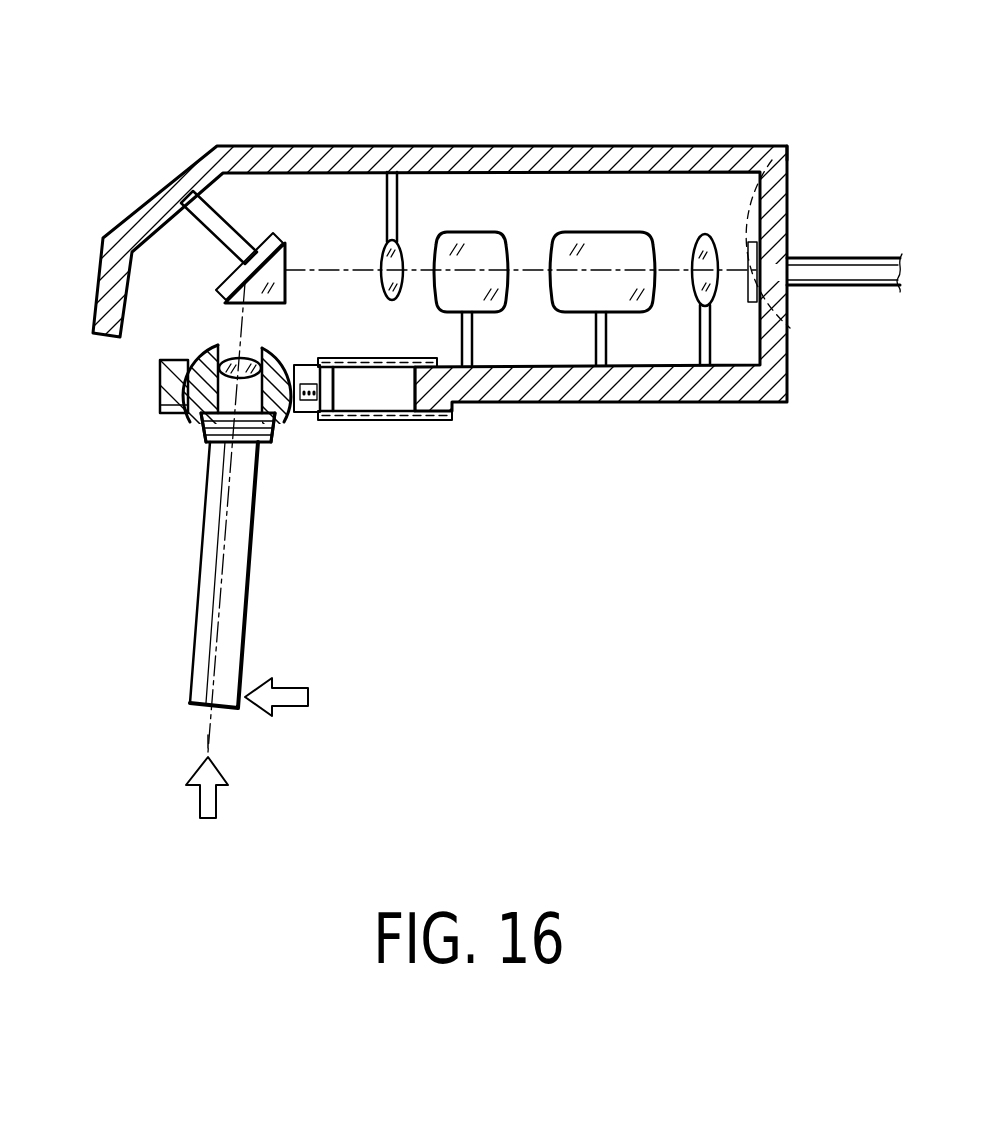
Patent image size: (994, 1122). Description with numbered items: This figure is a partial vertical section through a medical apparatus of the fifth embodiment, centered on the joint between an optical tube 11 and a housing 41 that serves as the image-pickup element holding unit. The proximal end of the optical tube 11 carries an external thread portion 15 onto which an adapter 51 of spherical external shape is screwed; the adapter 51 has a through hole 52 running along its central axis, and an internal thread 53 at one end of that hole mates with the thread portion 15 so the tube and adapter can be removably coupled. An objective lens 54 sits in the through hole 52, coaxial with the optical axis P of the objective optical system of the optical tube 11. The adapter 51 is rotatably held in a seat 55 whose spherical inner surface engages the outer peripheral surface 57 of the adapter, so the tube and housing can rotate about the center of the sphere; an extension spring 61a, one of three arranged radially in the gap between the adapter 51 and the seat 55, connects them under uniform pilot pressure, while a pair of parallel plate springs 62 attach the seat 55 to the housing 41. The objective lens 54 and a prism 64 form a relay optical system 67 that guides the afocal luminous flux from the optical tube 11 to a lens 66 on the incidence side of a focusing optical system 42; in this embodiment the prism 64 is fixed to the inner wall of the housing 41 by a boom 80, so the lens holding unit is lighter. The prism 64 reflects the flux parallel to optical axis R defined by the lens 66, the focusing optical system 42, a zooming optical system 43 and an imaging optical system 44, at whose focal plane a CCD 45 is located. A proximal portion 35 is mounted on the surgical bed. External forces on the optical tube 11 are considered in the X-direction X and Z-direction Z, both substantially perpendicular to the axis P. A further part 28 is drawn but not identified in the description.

The optical tube 11 is at (193, 640).
The external thread portion 15 is at (206, 442).
The spherical lens holder 28 is at (187, 428).
The proximal portion 35 is at (857, 258).
The housing 41 is at (700, 403).
The focusing optical system 42 is at (478, 233).
The zooming optical system 43 is at (600, 233).
The imaging optical system 44 is at (706, 236).
The CCD 45 is at (787, 147).
The adapter 51 is at (213, 355).
The through hole 52 is at (290, 432).
The internal thread 53 is at (263, 444).
The objective lens 54 is at (265, 343).
The seat 55 is at (160, 408).
The outer peripheral surface 57 is at (160, 380).
The extension spring 61a is at (300, 416).
The plate springs 62 is at (341, 358).
The prism 64 is at (247, 340).
The lens 66 is at (398, 241).
The relay optical system 67 is at (255, 80).
The boom 80 is at (195, 230).
The optical axis R is at (792, 328).
The optical axis P is at (206, 741).
The X-direction X is at (294, 699).
The Z-direction Z is at (220, 791).